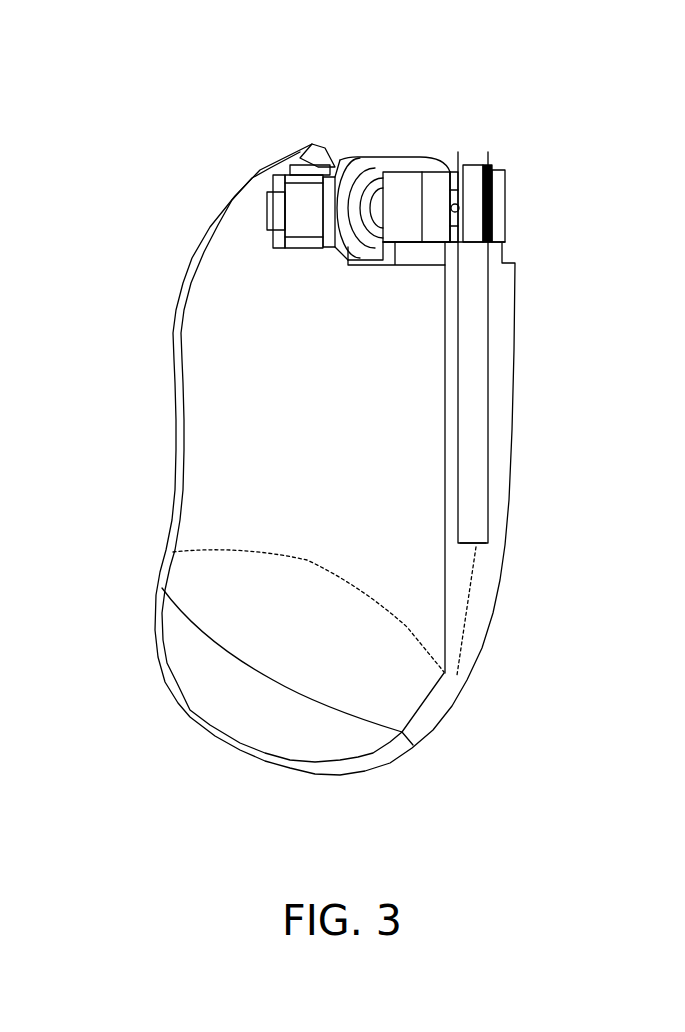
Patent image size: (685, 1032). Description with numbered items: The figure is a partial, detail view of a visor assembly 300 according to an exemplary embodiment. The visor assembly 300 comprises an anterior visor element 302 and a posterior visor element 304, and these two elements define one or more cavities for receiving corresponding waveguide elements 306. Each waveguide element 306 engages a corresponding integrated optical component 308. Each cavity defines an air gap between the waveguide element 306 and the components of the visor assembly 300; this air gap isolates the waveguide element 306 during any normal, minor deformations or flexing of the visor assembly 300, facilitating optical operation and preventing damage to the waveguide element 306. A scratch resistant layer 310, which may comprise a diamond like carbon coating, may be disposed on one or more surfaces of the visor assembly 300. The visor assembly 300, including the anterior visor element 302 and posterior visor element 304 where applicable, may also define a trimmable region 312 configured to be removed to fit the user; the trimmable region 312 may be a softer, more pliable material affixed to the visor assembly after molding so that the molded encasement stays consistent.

The visor assembly 300 is at (582, 135).
The anterior visor element 302 is at (500, 470).
The posterior visor element 304 is at (452, 430).
The waveguide element 306 is at (477, 525).
The integrated optical component 308 is at (407, 135).
The scratch resistant layer 310 is at (515, 345).
The trimmable region 312 is at (208, 672).